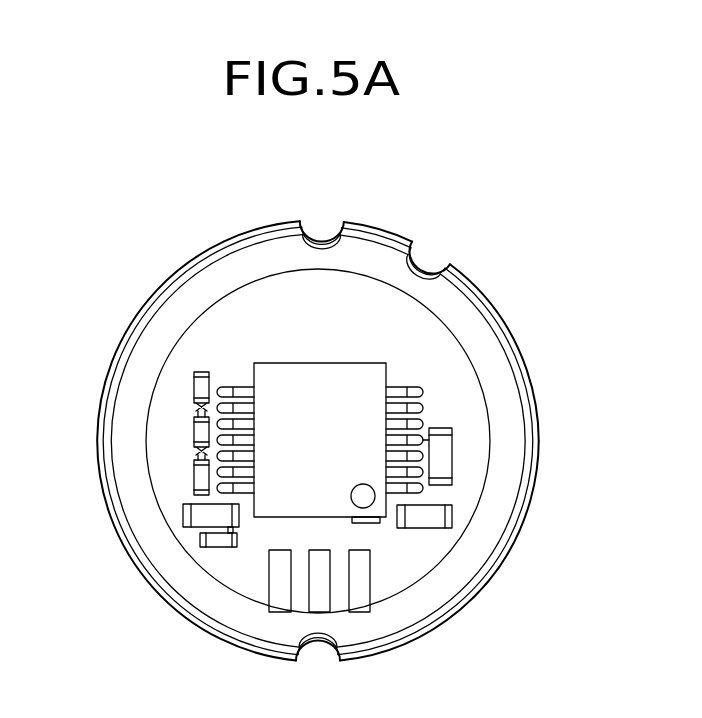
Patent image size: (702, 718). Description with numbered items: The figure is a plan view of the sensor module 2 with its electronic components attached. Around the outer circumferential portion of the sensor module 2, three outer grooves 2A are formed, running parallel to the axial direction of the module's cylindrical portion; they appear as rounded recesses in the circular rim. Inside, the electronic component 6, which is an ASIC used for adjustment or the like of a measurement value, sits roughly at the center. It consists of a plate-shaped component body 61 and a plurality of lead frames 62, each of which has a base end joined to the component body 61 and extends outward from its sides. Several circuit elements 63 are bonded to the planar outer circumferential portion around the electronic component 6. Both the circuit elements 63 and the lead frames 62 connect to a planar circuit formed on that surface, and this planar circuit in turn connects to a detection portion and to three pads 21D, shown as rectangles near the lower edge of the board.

The sensor module 2 is at (536, 181).
The outer groove 2A is at (322, 233).
The electronic component 6 is at (412, 411).
The component body 61 is at (348, 392).
The lead frame 62 is at (408, 389).
The circuit element 63 is at (203, 514).
The pad 21D is at (277, 588).